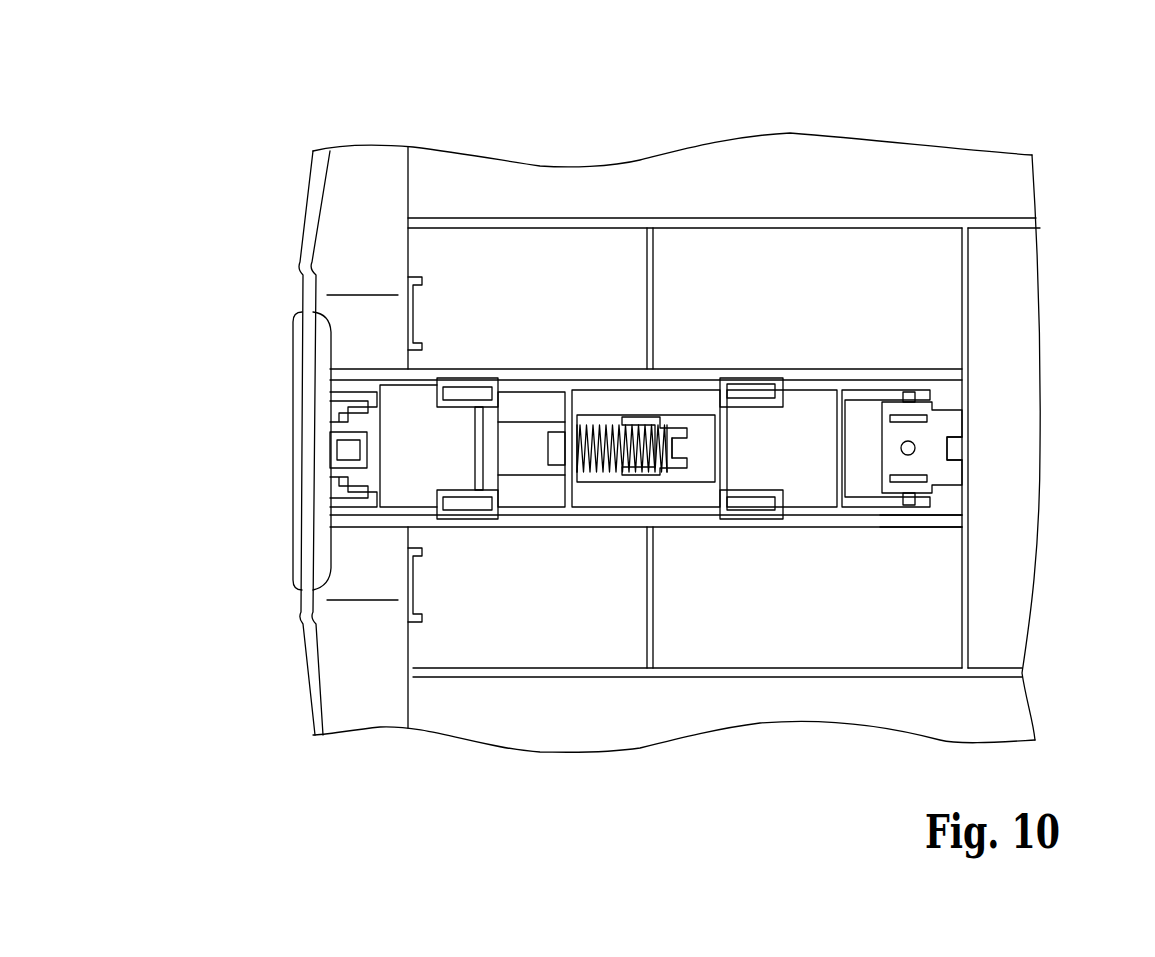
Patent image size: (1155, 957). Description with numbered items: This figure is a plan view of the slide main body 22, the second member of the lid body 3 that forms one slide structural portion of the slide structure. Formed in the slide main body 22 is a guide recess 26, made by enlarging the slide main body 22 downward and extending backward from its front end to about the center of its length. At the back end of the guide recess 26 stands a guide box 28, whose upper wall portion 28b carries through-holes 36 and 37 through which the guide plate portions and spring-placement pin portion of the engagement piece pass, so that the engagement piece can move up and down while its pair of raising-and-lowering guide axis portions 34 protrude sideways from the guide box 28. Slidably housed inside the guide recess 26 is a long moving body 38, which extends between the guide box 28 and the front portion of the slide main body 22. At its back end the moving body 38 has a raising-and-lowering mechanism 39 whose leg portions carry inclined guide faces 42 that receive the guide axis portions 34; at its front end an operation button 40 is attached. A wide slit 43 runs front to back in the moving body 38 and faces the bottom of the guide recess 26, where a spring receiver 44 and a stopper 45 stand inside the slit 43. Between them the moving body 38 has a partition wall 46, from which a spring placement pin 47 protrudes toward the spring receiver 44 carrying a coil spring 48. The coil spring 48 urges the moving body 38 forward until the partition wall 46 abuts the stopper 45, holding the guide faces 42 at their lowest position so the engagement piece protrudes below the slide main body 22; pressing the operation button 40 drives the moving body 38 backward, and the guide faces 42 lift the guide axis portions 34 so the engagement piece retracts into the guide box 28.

The lid body 3 is at (1008, 87).
The slide main body 22 is at (684, 178).
The guide recess 26 is at (635, 369).
The guide box 28 is at (920, 432).
The upper wall portion 28b is at (940, 449).
The raising-and-lowering guide axis portions 34 is at (915, 392).
The through-hole 36 is at (922, 415).
The through-hole 37 is at (915, 453).
The moving body 38 is at (424, 422).
The raising-and-lowering mechanism 39 is at (903, 519).
The operation button 40 is at (289, 484).
The guide face 42 is at (876, 389).
The wide slit 43 is at (506, 422).
The spring receiver 44 is at (680, 475).
The stopper 45 is at (552, 450).
The partition wall 46 is at (577, 408).
The spring placement pin 47 is at (673, 447).
The coil spring 48 is at (603, 473).